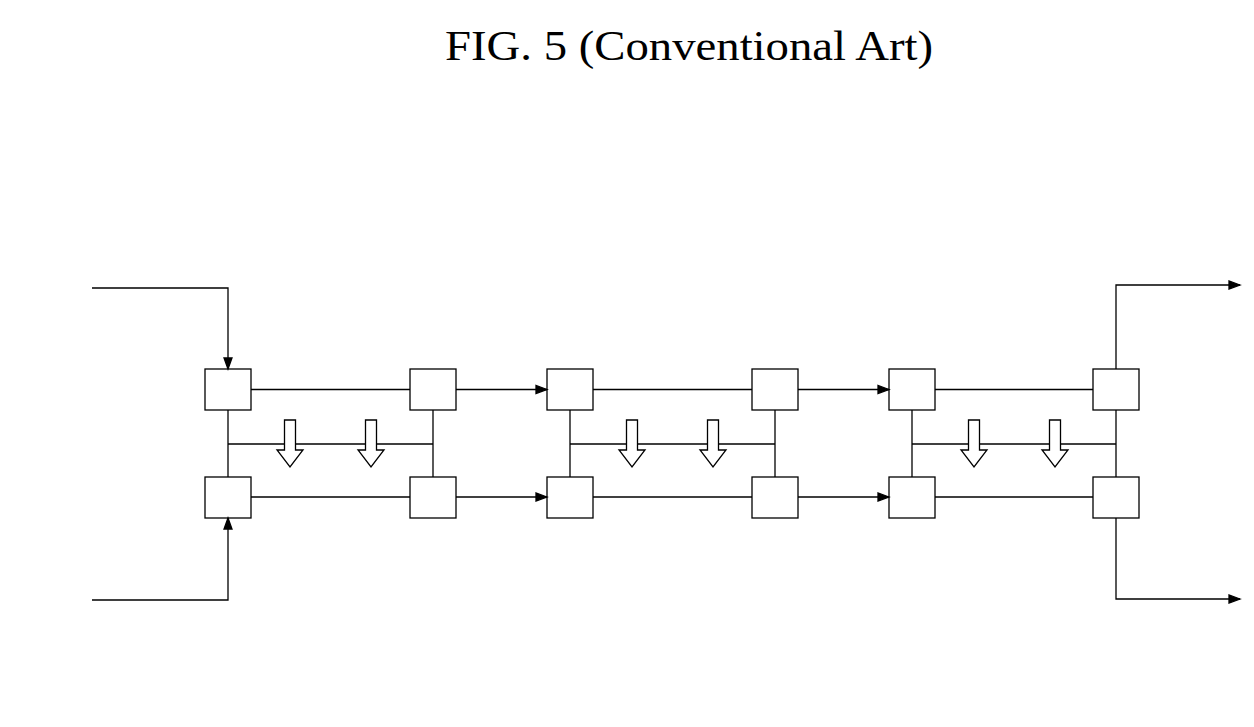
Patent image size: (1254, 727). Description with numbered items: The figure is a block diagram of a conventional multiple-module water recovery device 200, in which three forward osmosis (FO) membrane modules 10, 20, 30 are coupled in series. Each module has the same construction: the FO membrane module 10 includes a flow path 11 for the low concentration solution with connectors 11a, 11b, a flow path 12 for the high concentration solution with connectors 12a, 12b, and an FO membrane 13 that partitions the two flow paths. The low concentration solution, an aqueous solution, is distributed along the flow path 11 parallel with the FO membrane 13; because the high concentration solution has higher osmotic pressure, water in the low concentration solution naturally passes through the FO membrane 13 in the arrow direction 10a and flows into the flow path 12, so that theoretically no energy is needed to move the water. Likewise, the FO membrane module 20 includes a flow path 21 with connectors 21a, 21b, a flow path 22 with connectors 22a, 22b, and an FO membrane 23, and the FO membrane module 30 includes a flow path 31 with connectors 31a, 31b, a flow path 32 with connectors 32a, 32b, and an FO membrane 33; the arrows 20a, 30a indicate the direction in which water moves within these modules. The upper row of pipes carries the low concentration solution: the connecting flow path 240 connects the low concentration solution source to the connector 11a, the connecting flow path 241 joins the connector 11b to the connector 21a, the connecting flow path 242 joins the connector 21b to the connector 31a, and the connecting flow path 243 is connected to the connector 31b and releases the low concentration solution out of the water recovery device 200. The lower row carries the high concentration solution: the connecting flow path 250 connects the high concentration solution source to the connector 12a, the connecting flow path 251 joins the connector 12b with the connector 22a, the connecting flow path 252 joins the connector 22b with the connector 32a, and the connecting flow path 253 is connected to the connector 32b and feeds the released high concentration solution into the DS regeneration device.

The water recovery device 200 is at (676, 212).
The FO membrane module 10 is at (333, 301).
The FO membrane module 20 is at (675, 301).
The FO membrane module 30 is at (1016, 301).
The arrow direction 10a is at (291, 412).
The arrow 20a is at (633, 412).
The arrow 30a is at (975, 412).
The flow path for low concentration solution 11 is at (333, 388).
The flow path for high concentration solution 12 is at (331, 498).
The FO membrane 13 is at (351, 443).
The flow path for low concentration solution 21 is at (675, 388).
The flow path for high concentration solution 22 is at (673, 498).
The FO membrane 23 is at (693, 443).
The flow path for low concentration solution 31 is at (1017, 388).
The flow path for high concentration solution 32 is at (1013, 498).
The FO membrane 33 is at (1033, 443).
The connector for low concentration solution 11a is at (243, 369).
The connector for low concentration solution 11b is at (435, 369).
The connector for high concentration solution 12a is at (243, 519).
The connector for high concentration solution 12b is at (433, 519).
The connector for low concentration solution 21a is at (585, 369).
The connector for low concentration solution 21b is at (777, 369).
The connector for high concentration solution 22a is at (585, 519).
The connector for high concentration solution 22b is at (775, 519).
The connector for low concentration solution 31a is at (911, 369).
The connector for low concentration solution 31b is at (1105, 369).
The connector for high concentration solution 32a is at (912, 519).
The connector for high concentration solution 32b is at (1105, 519).
The connecting flow path 240 is at (108, 285).
The connecting flow path 241 is at (500, 388).
The connecting flow path 242 is at (842, 388).
The connecting flow path 243 is at (1222, 290).
The connecting flow path 250 is at (108, 598).
The connecting flow path 251 is at (500, 498).
The connecting flow path 252 is at (842, 498).
The connecting flow path 253 is at (1222, 605).